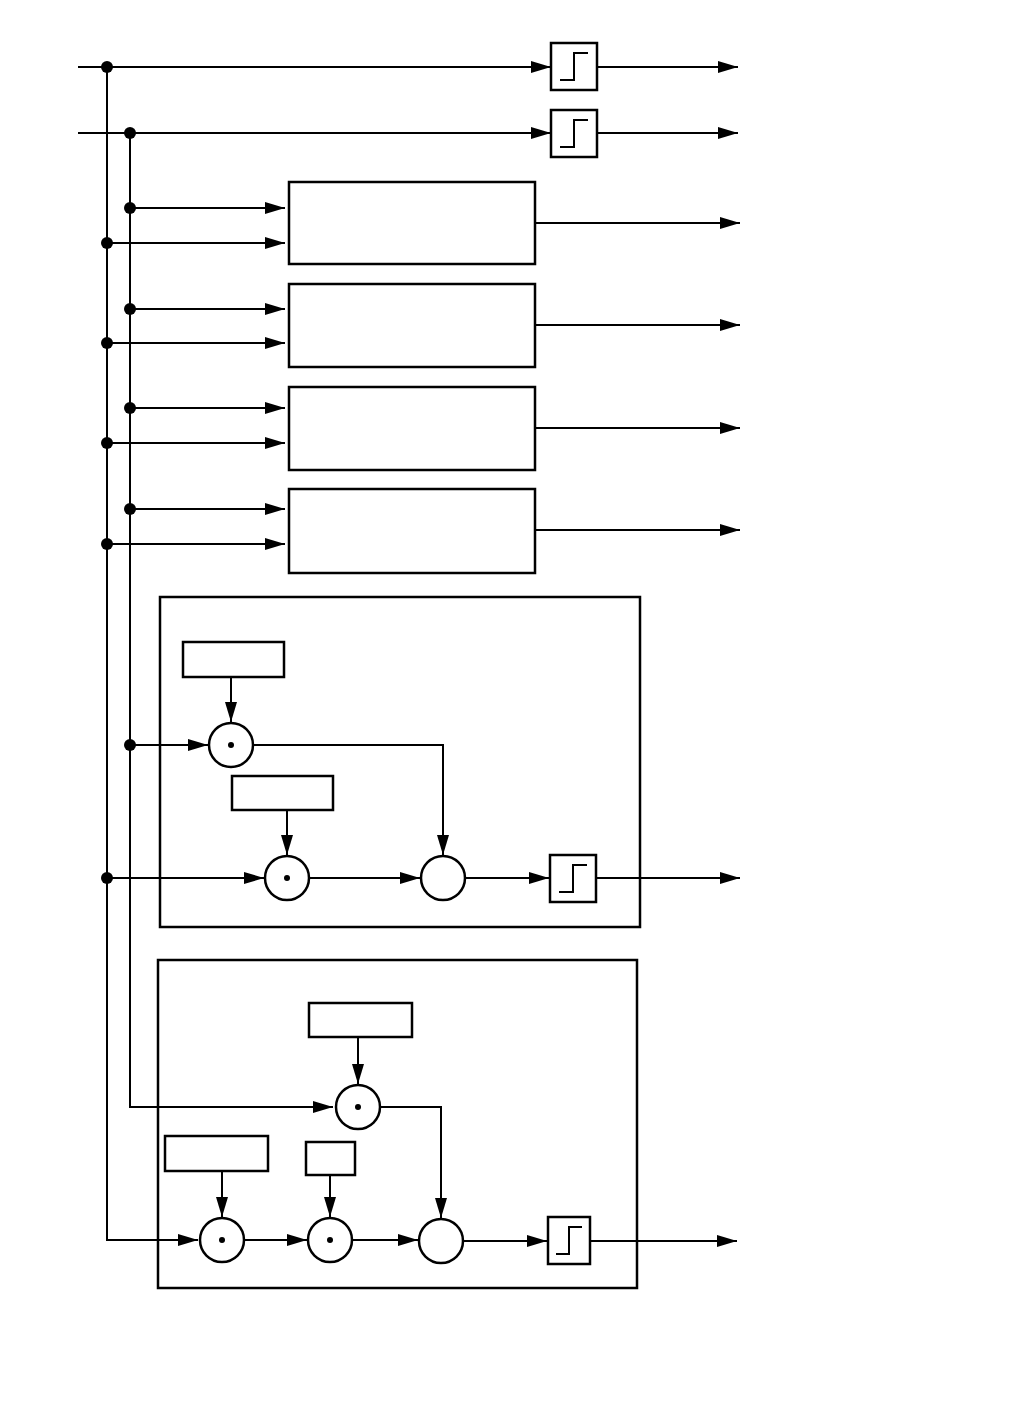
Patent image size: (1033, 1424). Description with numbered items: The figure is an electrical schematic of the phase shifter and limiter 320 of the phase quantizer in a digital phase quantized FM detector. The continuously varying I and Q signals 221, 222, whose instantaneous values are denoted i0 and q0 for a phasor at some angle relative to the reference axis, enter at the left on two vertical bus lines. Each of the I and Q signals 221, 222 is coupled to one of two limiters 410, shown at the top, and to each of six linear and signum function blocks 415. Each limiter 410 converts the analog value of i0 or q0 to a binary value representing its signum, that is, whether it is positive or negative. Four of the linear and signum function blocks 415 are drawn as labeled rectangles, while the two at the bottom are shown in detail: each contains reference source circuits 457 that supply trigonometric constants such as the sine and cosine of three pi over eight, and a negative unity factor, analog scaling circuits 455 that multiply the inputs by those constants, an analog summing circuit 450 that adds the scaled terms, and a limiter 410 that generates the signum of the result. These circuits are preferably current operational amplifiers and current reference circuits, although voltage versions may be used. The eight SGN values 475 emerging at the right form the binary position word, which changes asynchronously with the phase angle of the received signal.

The phase shifter and limiter 320 is at (872, 1073).
The I signal 221 is at (86, 67).
The Q signal 222 is at (97, 138).
The limiter 410 is at (552, 60).
The linear and signum function block 415 is at (535, 210).
The analog summing circuit 450 is at (458, 859).
The analog scaling circuit 455 is at (246, 730).
The reference source circuit 457 is at (231, 642).
The SGN value 475 is at (690, 67).